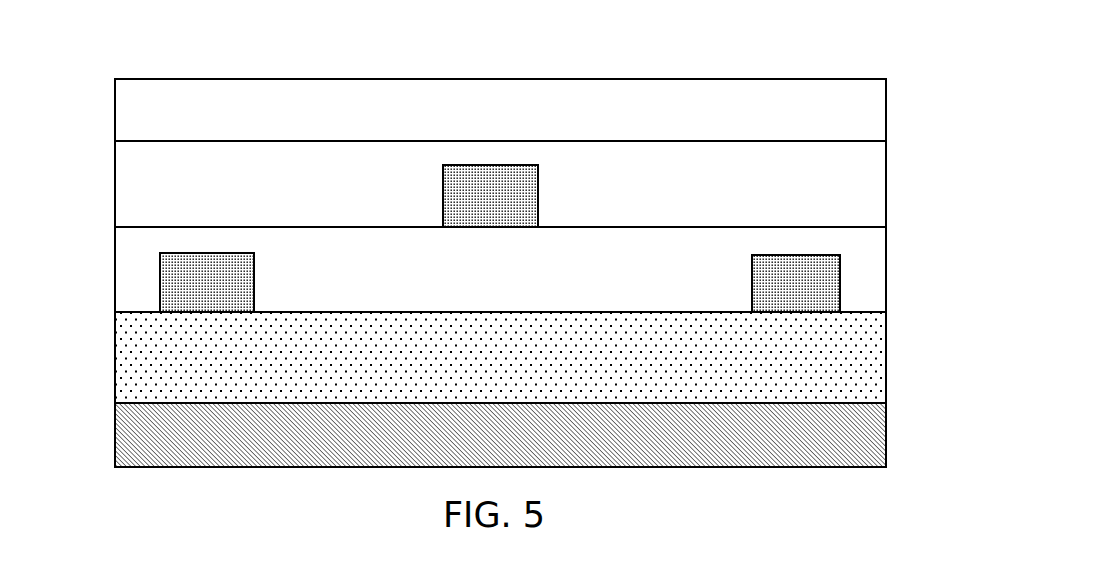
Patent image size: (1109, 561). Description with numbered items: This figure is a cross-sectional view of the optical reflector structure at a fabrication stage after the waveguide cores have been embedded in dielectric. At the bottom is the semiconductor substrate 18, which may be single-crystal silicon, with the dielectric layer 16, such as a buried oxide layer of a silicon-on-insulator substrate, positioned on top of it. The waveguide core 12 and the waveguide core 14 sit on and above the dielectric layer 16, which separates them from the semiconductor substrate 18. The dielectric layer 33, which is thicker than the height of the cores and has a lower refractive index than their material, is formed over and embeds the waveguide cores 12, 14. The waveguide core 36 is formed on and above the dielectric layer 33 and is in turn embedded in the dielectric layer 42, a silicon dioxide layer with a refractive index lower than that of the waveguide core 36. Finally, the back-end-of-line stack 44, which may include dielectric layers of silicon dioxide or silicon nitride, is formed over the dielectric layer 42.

The back-end-of-line stack 44 is at (197, 112).
The dielectric layer 42 is at (813, 187).
The dielectric layer 33 is at (193, 241).
The waveguide core 36 is at (510, 198).
The waveguide core 12 is at (195, 283).
The waveguide core 14 is at (805, 282).
The dielectric layer 16 is at (825, 370).
The semiconductor substrate 18 is at (823, 437).